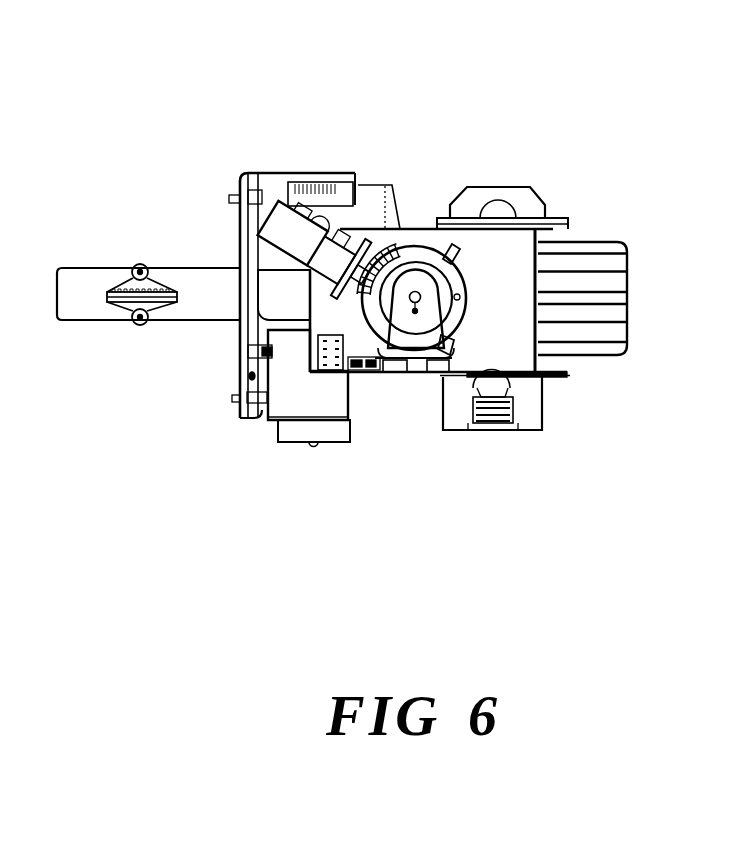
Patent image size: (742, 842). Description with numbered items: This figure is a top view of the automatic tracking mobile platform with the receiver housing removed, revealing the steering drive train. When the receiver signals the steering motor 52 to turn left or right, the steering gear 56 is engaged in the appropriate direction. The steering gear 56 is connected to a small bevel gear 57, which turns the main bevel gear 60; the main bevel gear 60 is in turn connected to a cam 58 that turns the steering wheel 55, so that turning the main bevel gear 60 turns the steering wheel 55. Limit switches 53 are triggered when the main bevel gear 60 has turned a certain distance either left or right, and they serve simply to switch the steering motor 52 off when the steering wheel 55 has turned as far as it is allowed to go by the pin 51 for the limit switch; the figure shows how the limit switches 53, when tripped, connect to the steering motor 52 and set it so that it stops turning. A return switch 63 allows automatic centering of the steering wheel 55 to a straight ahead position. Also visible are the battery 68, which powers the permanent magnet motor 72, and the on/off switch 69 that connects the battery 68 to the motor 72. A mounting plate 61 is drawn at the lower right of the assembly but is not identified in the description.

The pin 51 is at (462, 288).
The steering motor 52 is at (280, 200).
The limit switches 53 is at (460, 258).
The steering wheel 55 is at (614, 268).
The steering gear 56 is at (384, 245).
The small bevel gear 57 is at (402, 248).
The cam 58 is at (412, 345).
The main bevel gear 60 is at (468, 192).
The mounting plate 61 is at (547, 378).
The return switch 63 is at (440, 378).
The battery 68 is at (292, 400).
The on/off switch 69 is at (240, 419).
The permanent magnet motor 72 is at (510, 326).